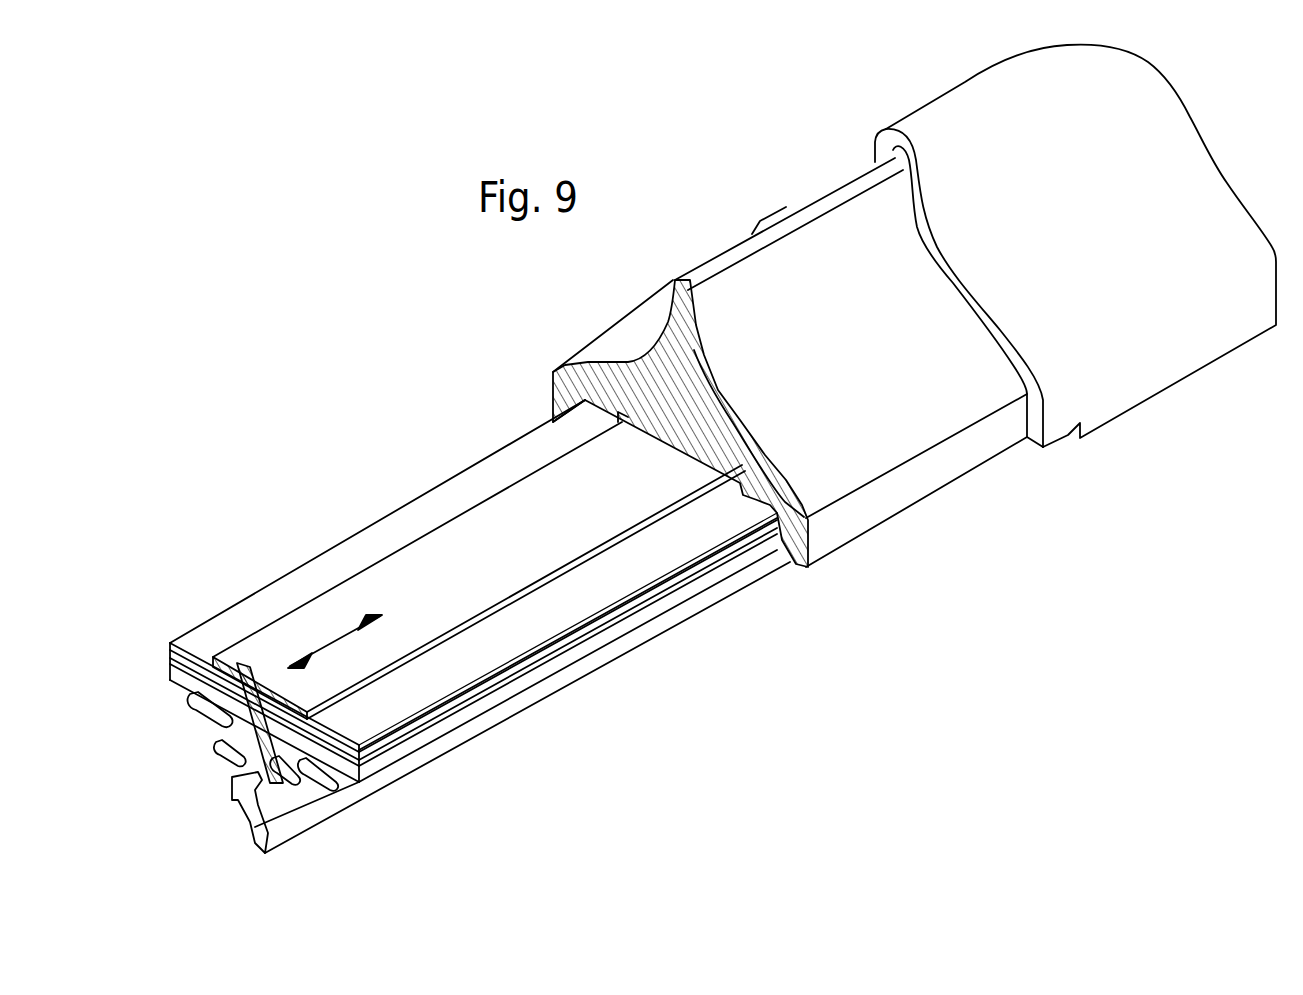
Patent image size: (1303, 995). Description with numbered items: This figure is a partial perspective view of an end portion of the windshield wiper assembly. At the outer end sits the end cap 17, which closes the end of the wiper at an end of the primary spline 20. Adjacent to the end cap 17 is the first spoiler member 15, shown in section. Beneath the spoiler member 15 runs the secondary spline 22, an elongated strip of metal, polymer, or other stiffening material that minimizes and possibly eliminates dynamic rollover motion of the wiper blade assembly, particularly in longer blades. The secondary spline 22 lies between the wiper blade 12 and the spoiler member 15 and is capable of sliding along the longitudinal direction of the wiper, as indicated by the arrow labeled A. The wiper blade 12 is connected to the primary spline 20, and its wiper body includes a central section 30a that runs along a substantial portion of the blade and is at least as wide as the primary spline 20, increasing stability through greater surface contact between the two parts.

The wiper blade 12 is at (257, 762).
The first spoiler member 15 is at (858, 371).
The end cap 17 is at (1101, 233).
The primary spline 20 is at (360, 769).
The secondary spline 22 is at (536, 555).
The central section 30a is at (433, 683).